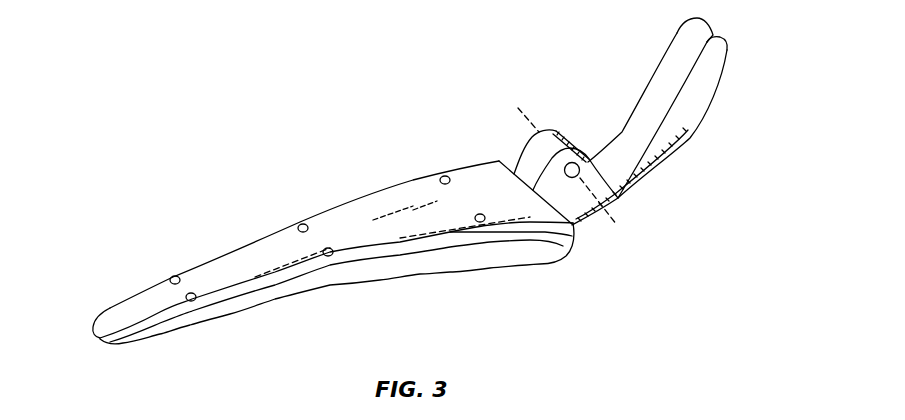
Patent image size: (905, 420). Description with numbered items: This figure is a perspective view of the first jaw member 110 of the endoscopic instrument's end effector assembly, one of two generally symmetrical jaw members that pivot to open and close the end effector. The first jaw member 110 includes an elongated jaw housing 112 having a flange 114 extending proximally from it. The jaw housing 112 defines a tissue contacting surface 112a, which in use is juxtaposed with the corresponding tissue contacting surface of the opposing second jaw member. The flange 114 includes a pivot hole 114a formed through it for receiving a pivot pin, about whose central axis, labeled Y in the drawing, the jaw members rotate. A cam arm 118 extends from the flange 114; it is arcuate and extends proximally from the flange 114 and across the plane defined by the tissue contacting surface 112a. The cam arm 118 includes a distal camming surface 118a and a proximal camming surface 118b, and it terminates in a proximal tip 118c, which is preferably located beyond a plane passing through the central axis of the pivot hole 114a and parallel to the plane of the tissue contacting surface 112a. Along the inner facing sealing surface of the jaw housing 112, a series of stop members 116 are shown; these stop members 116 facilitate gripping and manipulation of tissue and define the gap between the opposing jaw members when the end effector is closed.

The first jaw member 110 is at (199, 212).
The jaw housing 112 is at (450, 273).
The tissue contacting surface 112a is at (117, 314).
The flange 114 is at (567, 132).
The pivot hole 114a is at (578, 175).
The stop members 116 is at (191, 293).
The cam arm 118 is at (688, 114).
The distal camming surface 118a is at (683, 57).
The proximal camming surface 118b is at (712, 86).
The proximal tip 118c is at (713, 27).